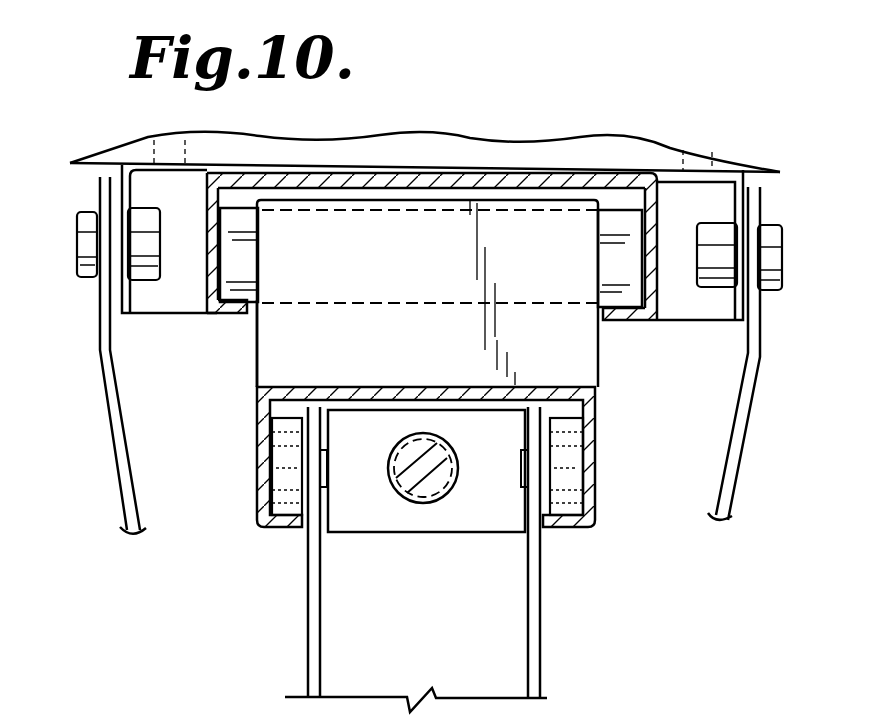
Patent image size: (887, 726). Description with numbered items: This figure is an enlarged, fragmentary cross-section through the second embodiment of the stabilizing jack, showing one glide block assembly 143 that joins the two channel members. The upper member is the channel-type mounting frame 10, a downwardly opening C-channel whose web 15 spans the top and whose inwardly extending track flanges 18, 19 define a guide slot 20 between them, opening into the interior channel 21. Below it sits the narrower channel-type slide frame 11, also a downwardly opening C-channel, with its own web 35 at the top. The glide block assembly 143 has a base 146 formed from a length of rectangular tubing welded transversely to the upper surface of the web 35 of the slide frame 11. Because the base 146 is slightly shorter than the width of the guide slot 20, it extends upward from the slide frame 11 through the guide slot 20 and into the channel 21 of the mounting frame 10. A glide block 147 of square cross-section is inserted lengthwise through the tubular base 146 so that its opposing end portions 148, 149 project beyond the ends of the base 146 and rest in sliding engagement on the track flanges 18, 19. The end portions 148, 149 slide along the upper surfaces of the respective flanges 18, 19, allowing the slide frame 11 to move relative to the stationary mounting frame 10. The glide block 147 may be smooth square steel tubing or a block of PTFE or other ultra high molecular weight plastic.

The mounting frame 10 is at (208, 232).
The slide frame 11 is at (395, 529).
The web 15 is at (470, 182).
The track flange 18 is at (232, 318).
The track flange 19 is at (636, 320).
The guide slot 20 is at (262, 328).
The channel 21 is at (228, 284).
The web 35 is at (397, 386).
The glide block assembly 143 is at (422, 456).
The base 146 is at (600, 360).
The glide block 147 is at (330, 305).
The end portion 148 is at (214, 189).
The end portion 149 is at (620, 214).